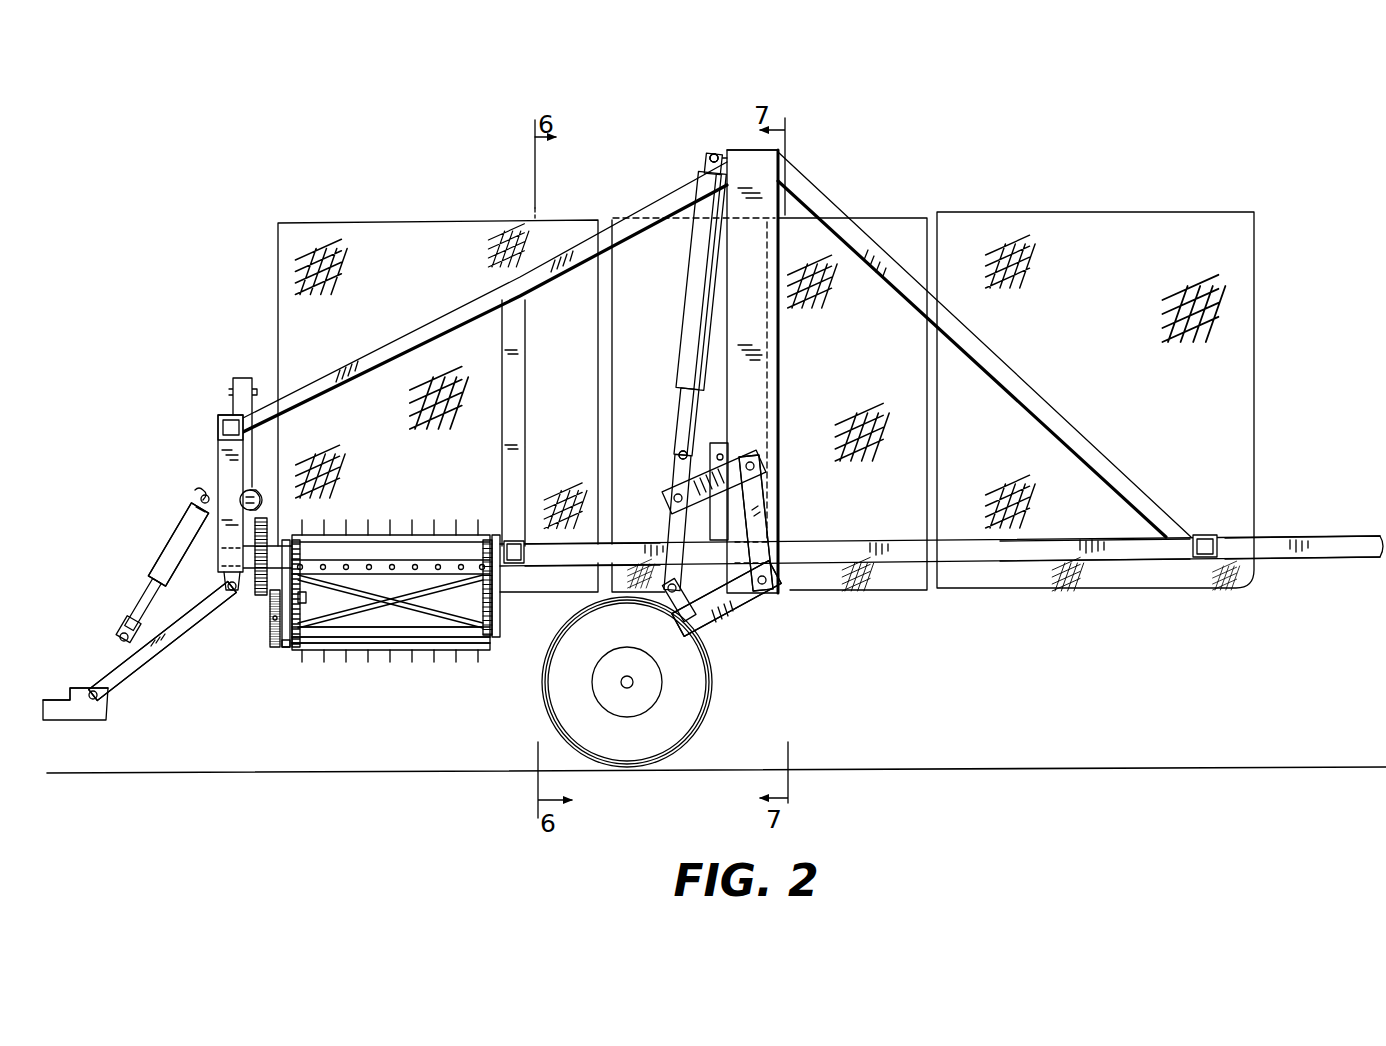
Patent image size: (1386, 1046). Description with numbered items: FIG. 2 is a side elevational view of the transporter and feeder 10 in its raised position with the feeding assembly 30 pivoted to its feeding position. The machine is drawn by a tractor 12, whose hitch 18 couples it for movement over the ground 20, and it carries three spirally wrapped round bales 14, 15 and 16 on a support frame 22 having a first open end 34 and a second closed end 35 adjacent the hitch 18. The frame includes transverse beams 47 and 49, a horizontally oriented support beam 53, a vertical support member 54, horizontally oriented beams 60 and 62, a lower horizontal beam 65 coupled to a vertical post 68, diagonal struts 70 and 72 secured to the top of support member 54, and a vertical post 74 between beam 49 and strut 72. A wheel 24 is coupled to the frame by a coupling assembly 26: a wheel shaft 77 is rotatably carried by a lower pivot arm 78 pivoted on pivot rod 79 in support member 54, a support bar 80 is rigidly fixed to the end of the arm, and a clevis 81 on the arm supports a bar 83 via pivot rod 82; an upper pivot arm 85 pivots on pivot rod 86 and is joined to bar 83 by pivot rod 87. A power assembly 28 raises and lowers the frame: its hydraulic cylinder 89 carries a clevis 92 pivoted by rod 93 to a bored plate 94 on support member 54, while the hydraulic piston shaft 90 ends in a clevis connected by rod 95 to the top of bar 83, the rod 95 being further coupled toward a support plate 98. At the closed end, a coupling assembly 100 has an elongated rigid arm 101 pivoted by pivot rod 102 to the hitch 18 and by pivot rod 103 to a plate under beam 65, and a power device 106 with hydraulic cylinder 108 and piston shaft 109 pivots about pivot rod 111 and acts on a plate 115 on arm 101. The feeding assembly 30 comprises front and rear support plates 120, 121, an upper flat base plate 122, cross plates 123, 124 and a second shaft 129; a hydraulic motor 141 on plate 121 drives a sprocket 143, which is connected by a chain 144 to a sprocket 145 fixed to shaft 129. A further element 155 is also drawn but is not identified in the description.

The transporter and feeder 10 is at (220, 370).
The tractor 12 is at (58, 696).
The bale 14 is at (420, 222).
The bale 15 is at (885, 215).
The bale 16 is at (1134, 212).
The hitch 18 is at (80, 722).
The ground 20 is at (237, 768).
The support frame 22 is at (212, 426).
The wheel 24 is at (644, 747).
The coupling assembly 26 is at (746, 604).
The power assembly 28 is at (690, 164).
The feeding assembly 30 is at (450, 660).
The first open end 34 is at (1302, 528).
The second closed end 35 is at (246, 372).
The transverse beam 47 is at (1205, 560).
The transverse beam 49 is at (514, 566).
The support beam 53 is at (1342, 558).
The support member 54 is at (781, 154).
The beam 60 is at (1142, 550).
The beam 62 is at (578, 550).
The lower horizontal beam 65 is at (228, 567).
The vertical post 68 is at (220, 462).
The diagonal strut 70 is at (822, 202).
The diagonal strut 72 is at (650, 206).
The vertical post 74 is at (528, 410).
The wheel shaft 77 is at (634, 685).
The lower pivot arm 78 is at (714, 626).
The pivot rod 79 is at (769, 580).
The support bar 80 is at (764, 519).
The clevis 81 is at (684, 616).
The pivot rod 82 is at (668, 592).
The bar 83 is at (666, 572).
The upper pivot arm 85 is at (738, 455).
The pivot rod 86 is at (754, 463).
The pivot rod 87 is at (668, 496).
The hydraulic cylinder 89 is at (688, 301).
The hydraulic piston shaft 90 is at (681, 411).
The clevis 92 is at (710, 148).
The rod 93 is at (706, 166).
The plate 94 is at (716, 148).
The rod 95 is at (677, 460).
The support plate 98 is at (718, 443).
The coupling assembly 100 is at (198, 632).
The elongated rigid arm 101 is at (168, 672).
The pivot rod 102 is at (96, 692).
The pivot rod 103 is at (226, 593).
The power device 106 is at (134, 544).
The hydraulic cylinder 108 is at (176, 532).
The hydraulic piston shaft 109 is at (126, 614).
The pivot rod 111 is at (201, 499).
The plate 115 is at (112, 634).
The front support plate 120 is at (496, 640).
The rear support plate 121 is at (296, 649).
The upper flat base plate 122 is at (380, 605).
The cross plate 123 is at (360, 580).
The cross plate 124 is at (430, 598).
The second shaft 129 is at (333, 635).
The hydraulic motor 141 is at (304, 604).
The sprocket 143 is at (268, 616).
The chain 144 is at (274, 616).
The sprocket 145 is at (283, 648).
The drive sprocket 155 is at (258, 600).